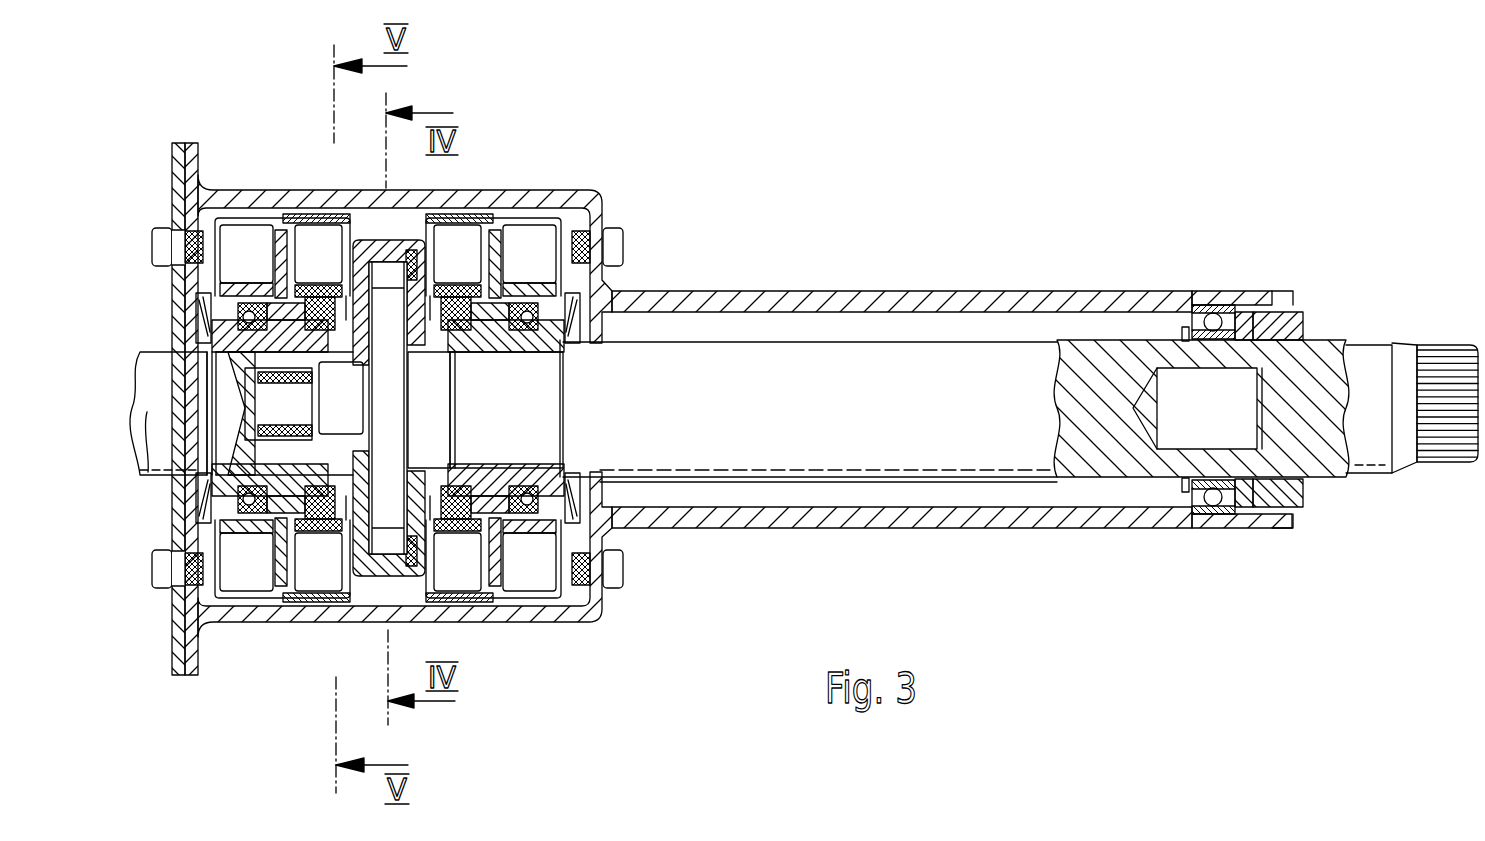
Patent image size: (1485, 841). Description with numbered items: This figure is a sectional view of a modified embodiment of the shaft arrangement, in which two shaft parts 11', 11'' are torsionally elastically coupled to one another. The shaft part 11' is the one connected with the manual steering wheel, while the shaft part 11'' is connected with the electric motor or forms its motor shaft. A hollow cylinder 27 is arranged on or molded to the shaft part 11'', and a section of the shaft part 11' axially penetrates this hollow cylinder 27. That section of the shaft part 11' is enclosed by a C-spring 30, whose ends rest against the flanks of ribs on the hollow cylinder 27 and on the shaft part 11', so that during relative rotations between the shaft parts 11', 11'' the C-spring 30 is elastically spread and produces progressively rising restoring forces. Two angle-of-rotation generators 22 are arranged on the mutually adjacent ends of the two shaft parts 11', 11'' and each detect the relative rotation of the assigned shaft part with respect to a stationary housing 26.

The angle-of-rotation generator 22 is at (237, 240).
The hollow cylinder 27 is at (363, 242).
The C-spring 30 is at (388, 266).
The housing 26 is at (917, 523).
The shaft part 11' is at (1266, 456).
The shaft part 11'' is at (173, 448).